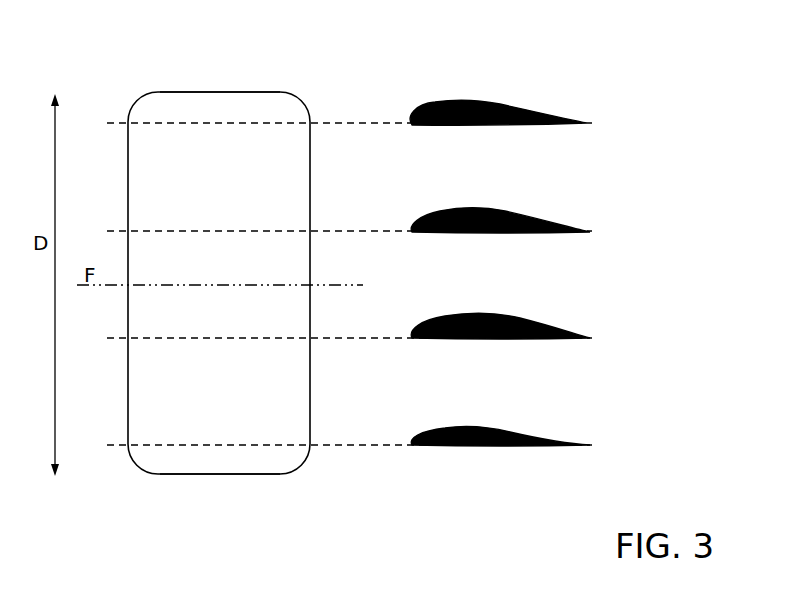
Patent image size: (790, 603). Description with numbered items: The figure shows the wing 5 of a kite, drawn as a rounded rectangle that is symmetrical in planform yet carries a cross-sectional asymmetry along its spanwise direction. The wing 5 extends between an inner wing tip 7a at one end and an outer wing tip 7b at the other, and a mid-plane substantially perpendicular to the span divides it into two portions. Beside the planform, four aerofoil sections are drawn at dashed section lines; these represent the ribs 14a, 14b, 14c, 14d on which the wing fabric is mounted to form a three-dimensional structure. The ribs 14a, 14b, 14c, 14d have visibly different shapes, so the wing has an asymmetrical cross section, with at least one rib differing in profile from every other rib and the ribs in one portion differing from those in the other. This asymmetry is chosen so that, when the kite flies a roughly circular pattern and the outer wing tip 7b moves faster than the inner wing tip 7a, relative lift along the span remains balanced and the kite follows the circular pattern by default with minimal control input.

The blade body 5 is at (310, 452).
The inner wing tip 7a is at (220, 91).
The outer wing tip 7b is at (213, 475).
The rib 14a is at (533, 110).
The rib 14b is at (538, 217).
The rib 14c is at (555, 328).
The rib 14d is at (550, 440).